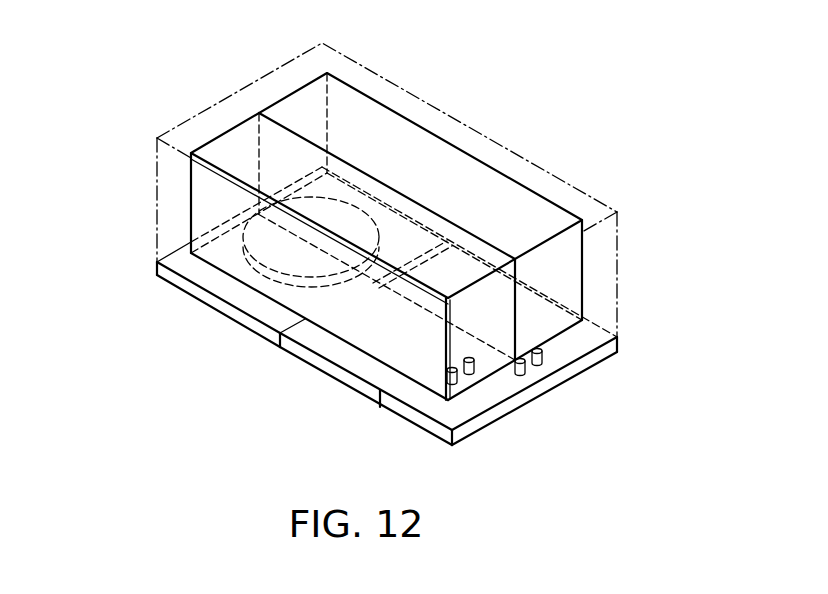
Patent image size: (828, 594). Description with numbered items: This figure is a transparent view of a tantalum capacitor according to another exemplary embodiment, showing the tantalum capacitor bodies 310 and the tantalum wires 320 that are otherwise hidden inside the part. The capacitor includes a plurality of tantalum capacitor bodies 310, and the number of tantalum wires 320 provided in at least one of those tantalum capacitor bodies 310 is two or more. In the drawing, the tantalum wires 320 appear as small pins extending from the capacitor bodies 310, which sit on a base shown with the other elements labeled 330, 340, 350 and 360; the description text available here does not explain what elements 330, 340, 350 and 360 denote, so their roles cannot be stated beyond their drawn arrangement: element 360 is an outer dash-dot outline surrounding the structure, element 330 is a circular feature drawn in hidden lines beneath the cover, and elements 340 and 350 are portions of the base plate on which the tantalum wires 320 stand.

The tantalum capacitor bodies 310 is at (465, 152).
The tantalum wires 320 is at (478, 368).
The through hole 330 is at (244, 234).
The lower plate 340 is at (422, 419).
The base plate 350 is at (180, 282).
The housing 360 is at (535, 166).